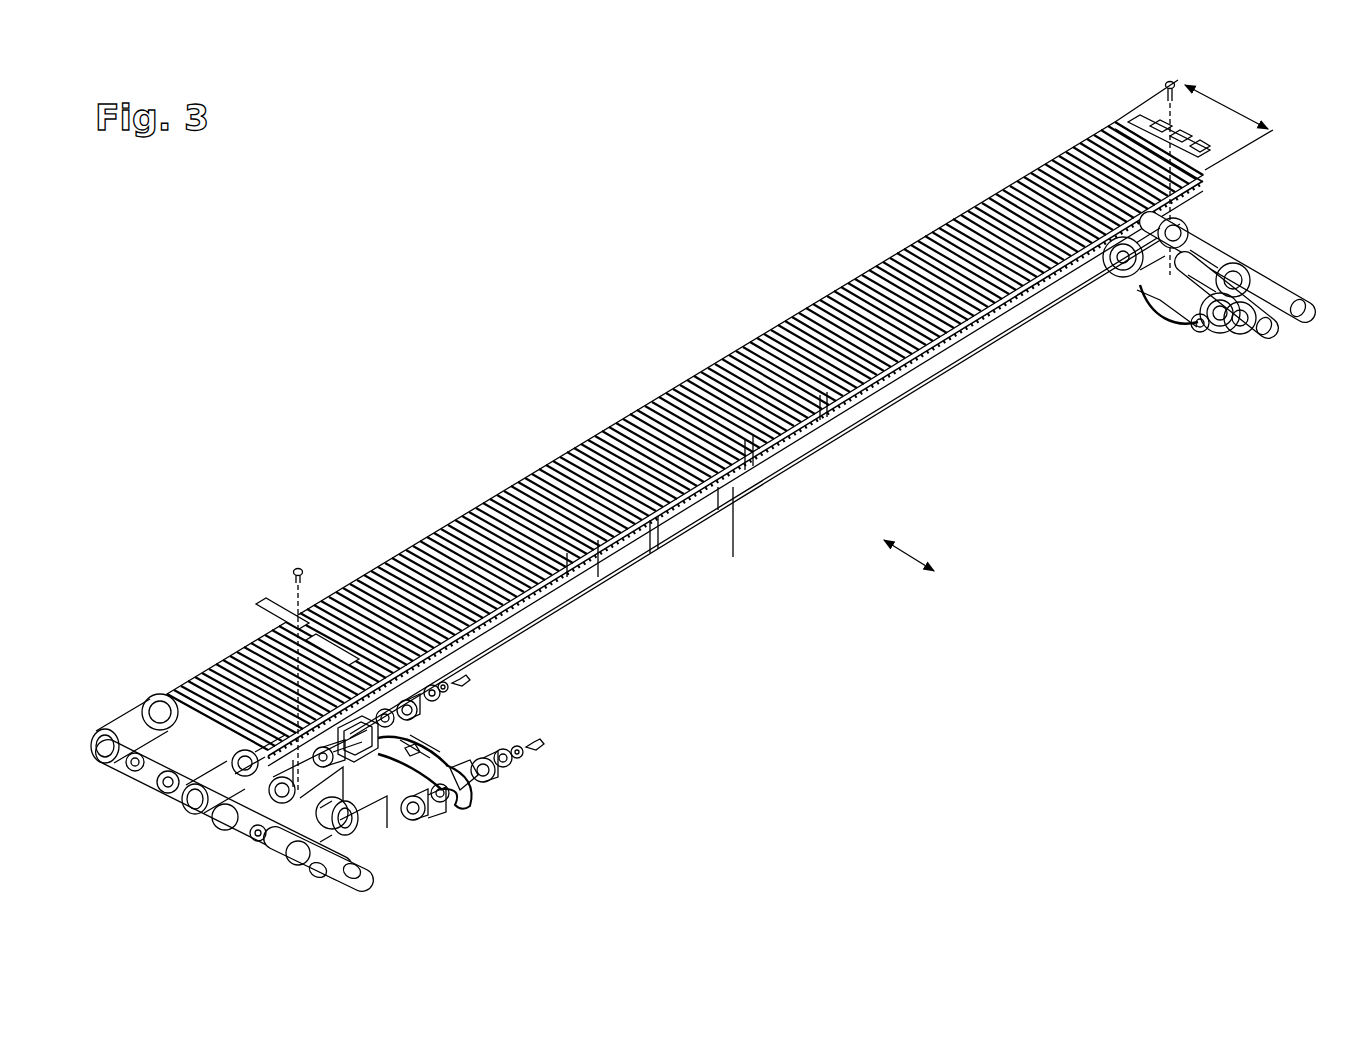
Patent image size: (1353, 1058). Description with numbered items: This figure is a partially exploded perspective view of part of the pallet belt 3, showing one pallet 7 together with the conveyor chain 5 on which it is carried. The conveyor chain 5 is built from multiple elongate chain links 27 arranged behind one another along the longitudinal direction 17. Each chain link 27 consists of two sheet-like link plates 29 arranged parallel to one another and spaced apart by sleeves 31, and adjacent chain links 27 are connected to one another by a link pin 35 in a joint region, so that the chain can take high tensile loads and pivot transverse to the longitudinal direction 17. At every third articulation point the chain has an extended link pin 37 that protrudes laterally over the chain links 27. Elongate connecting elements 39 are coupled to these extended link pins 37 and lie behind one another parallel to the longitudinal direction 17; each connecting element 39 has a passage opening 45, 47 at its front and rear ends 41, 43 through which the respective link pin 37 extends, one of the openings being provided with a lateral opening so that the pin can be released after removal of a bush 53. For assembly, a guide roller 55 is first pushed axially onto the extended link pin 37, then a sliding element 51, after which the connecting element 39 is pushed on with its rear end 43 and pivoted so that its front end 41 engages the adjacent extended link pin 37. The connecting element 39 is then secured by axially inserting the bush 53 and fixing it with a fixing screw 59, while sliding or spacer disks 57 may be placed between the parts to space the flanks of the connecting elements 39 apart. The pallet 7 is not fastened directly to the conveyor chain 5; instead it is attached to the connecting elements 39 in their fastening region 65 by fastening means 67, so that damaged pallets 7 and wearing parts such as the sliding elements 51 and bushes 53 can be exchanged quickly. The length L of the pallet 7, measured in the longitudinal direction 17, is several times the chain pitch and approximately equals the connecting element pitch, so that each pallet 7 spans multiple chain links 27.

The pallet belt 3 is at (646, 342).
The conveyor chain 5 is at (703, 550).
The pallet 7 is at (540, 470).
The longitudinal direction 17 is at (910, 556).
The chain link 27 is at (217, 842).
The link plate 29 is at (187, 792).
The sleeve 31 is at (182, 752).
The link pin 35 is at (251, 845).
The extended link pin 37 is at (354, 770).
The connecting element 39 is at (449, 745).
The front end 41 is at (492, 813).
The rear end 43 is at (439, 832).
The passage opening 45 is at (465, 740).
The passage opening 47 is at (433, 727).
The sliding element 51 is at (457, 810).
The bush 53 is at (503, 794).
The guide roller 55 is at (353, 820).
The spacer disk 57 is at (521, 778).
The fixing screw 59 is at (537, 750).
The fastening region 65 is at (424, 741).
The fastening means 67 is at (306, 560).
The length of the pallets L is at (1194, 125).